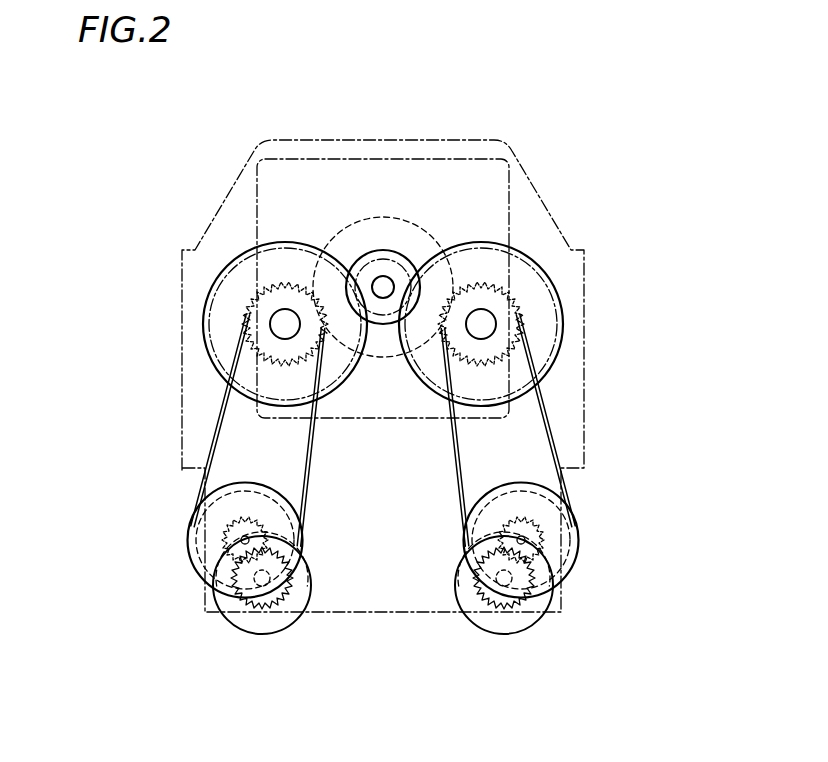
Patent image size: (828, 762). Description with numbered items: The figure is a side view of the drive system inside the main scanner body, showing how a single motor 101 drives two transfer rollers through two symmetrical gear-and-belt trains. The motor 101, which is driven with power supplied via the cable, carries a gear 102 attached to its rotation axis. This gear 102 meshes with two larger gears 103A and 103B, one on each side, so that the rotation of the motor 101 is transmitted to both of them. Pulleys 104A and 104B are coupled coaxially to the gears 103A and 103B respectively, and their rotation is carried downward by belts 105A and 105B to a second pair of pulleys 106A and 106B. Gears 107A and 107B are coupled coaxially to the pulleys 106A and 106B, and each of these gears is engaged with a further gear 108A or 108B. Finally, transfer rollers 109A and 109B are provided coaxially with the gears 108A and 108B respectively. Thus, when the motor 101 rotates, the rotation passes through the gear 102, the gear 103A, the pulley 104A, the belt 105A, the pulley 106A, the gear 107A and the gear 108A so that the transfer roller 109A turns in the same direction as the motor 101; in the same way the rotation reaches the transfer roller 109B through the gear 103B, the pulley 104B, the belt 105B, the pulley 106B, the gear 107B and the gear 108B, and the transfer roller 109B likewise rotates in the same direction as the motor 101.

The motor 101 is at (452, 172).
The gear 102 is at (382, 250).
The gear 103A is at (537, 262).
The gear 103B is at (230, 263).
The pulley 104A is at (510, 295).
The pulley 104B is at (250, 297).
The belt 105A is at (552, 423).
The belt 105B is at (218, 423).
The pulley 106A is at (522, 483).
The pulley 106B is at (245, 483).
The gear 107A is at (523, 540).
The gear 107B is at (245, 540).
The gear 108A is at (527, 597).
The gear 108B is at (242, 597).
The transfer roller 109A is at (481, 633).
The transfer roller 109B is at (287, 633).